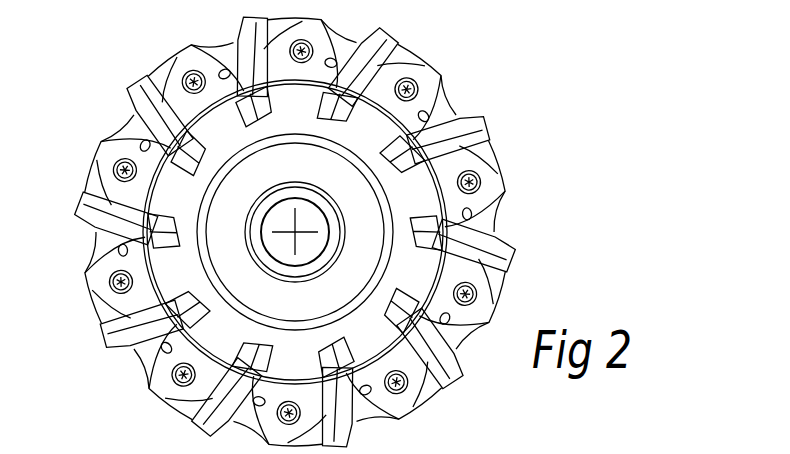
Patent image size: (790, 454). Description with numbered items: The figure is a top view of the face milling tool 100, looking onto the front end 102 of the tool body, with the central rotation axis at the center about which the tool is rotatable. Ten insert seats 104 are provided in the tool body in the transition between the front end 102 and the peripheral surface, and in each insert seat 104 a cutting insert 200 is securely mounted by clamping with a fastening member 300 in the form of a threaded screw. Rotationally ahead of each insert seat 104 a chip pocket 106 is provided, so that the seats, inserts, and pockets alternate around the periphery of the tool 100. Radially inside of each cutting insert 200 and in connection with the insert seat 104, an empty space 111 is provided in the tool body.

The face milling tool 100 is at (321, 227).
The front end 102 is at (281, 227).
The insert seat 104 is at (224, 155).
The chip pocket 106 is at (494, 191).
The empty space 111 is at (420, 211).
The cutting insert 200 is at (508, 244).
The fastening member 300 is at (510, 292).